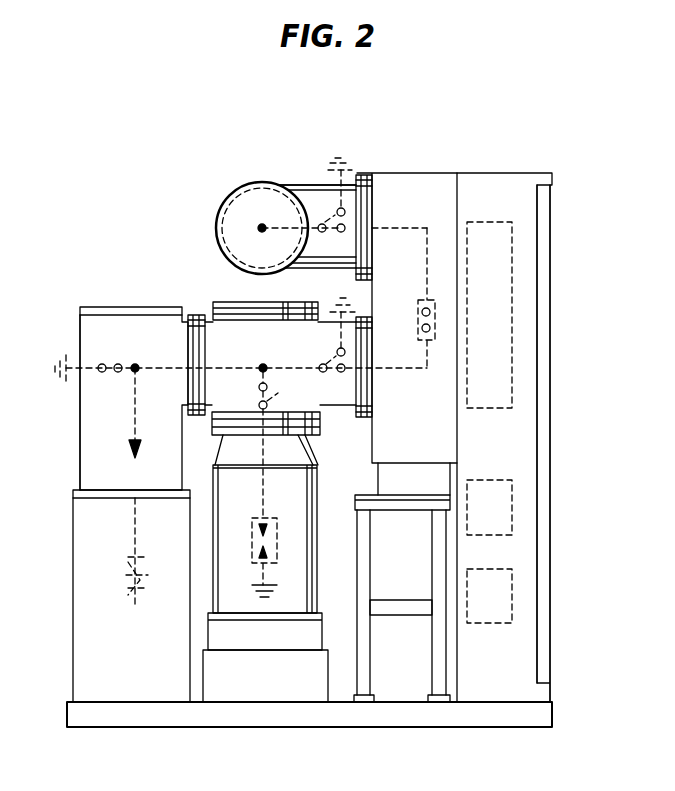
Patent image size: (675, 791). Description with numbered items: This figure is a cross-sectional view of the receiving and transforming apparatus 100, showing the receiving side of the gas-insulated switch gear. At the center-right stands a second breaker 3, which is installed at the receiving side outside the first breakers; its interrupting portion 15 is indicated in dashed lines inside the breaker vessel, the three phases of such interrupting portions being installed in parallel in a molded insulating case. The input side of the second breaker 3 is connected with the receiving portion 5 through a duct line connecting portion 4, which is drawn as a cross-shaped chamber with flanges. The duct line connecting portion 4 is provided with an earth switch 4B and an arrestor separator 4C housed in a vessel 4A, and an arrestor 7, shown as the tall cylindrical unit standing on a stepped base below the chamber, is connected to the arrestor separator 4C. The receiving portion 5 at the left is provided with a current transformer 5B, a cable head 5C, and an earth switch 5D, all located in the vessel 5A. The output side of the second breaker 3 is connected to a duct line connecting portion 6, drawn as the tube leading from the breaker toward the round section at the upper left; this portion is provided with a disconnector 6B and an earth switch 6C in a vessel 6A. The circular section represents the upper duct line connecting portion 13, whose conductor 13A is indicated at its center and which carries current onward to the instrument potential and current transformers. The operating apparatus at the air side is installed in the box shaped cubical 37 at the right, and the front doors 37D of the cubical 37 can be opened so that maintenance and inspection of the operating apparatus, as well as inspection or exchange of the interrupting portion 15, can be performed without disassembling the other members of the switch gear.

The receiving and transforming apparatus 100 is at (88, 129).
The second breaker 3 is at (398, 172).
The box shaped cubical 37 is at (505, 172).
The front door 37D is at (598, 394).
The upper duct line connecting portion 13 is at (218, 228).
The conductor 13A is at (262, 228).
The duct line connecting portion 6 is at (303, 170).
The vessel 6A is at (292, 185).
The disconnector 6B is at (362, 228).
The earth switch 6C is at (335, 160).
The duct line connecting portion 4 is at (207, 313).
The vessel 4A is at (328, 360).
The earth switch 4B is at (345, 300).
The arrestor separator 4C is at (270, 398).
The receiving portion 5 is at (118, 302).
The vessel 5A is at (80, 452).
The current transformer 5B is at (128, 570).
The cable head 5C is at (132, 452).
The earth switch 5D is at (115, 360).
The arrestor 7 is at (250, 548).
The interrupting portion 15 is at (418, 326).